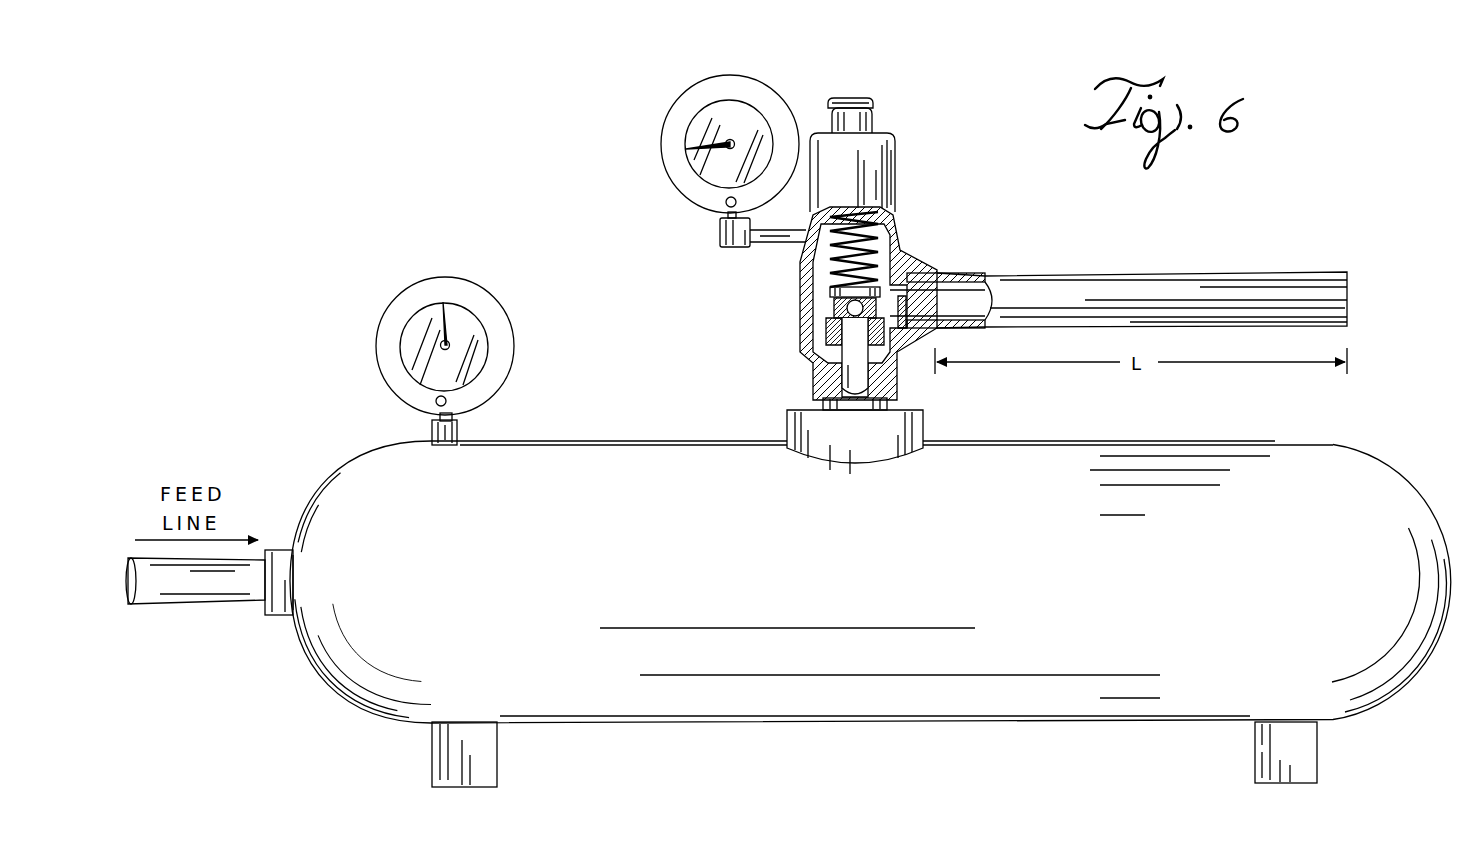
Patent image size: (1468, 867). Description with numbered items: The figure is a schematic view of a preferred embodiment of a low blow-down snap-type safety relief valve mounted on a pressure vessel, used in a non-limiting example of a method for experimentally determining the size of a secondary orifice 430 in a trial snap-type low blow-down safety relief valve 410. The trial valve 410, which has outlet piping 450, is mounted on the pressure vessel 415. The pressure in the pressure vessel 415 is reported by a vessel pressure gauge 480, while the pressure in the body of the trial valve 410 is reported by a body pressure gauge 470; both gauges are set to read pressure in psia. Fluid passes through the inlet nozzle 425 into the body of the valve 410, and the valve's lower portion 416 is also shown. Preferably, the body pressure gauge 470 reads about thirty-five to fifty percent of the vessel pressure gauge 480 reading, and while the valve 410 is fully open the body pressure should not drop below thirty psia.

The trial snap-type low blow-down safety relief valve 410 is at (903, 132).
The pressure vessel 415 is at (1212, 594).
The plunger 416 is at (856, 371).
The inlet nozzle 425 is at (847, 308).
The secondary orifice 430 is at (907, 308).
The outlet piping 450 is at (1290, 272).
The body pressure gauge 470 is at (654, 125).
The vessel pressure gauge 480 is at (382, 290).